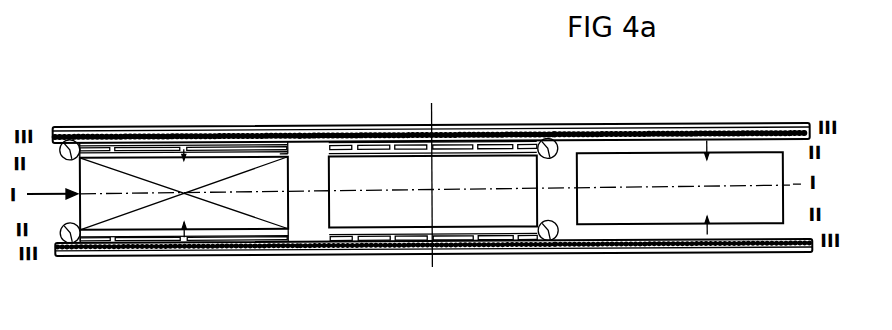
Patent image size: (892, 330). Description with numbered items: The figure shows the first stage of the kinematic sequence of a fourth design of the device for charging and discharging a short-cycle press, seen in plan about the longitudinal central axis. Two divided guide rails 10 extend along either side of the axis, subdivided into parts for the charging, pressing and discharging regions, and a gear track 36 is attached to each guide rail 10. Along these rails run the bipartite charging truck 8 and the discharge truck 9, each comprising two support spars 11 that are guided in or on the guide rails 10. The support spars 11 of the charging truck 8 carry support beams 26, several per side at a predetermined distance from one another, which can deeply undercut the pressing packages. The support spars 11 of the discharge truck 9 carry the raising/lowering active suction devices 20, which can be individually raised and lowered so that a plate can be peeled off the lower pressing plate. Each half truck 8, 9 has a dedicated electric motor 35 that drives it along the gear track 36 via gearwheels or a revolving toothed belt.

The charging truck 8 is at (147, 140).
The discharge truck 9 is at (352, 137).
The guide rail 10 is at (258, 130).
The support spar 11 is at (111, 140).
The active suction device 20 is at (388, 137).
The support beam 26 is at (193, 143).
The electric motor 35 is at (60, 133).
The gear track 36 is at (595, 125).